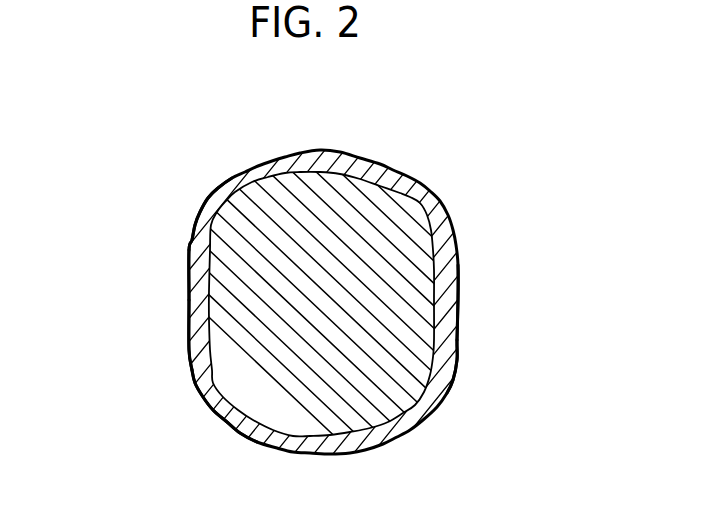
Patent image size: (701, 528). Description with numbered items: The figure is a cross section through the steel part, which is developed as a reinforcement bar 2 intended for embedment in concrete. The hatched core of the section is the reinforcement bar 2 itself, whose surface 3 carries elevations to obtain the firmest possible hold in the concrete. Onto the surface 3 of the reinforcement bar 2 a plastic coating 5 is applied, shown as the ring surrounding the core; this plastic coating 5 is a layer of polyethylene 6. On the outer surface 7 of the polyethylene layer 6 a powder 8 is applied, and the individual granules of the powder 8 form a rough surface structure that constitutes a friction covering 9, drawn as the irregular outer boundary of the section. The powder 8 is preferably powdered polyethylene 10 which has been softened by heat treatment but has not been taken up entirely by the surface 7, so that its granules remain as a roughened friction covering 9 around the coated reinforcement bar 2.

The reinforcement bar 2 is at (388, 240).
The surface 3 is at (403, 173).
The plastic coating 5 is at (460, 293).
The polyethylene layer 6 is at (190, 245).
The surface of the polyethylene layer 7 is at (458, 360).
The powder 8 is at (182, 292).
The friction covering 9 is at (188, 362).
The powdered polyethylene 10 is at (223, 426).